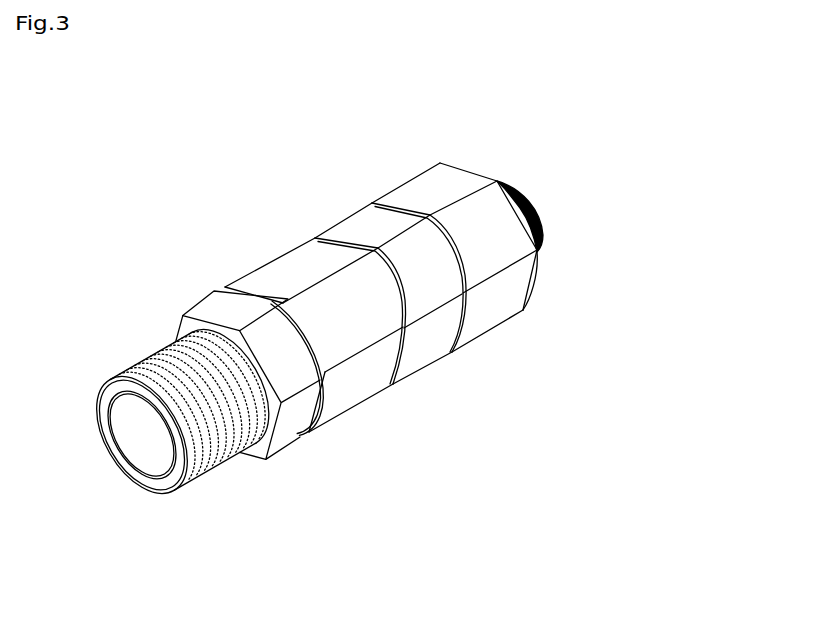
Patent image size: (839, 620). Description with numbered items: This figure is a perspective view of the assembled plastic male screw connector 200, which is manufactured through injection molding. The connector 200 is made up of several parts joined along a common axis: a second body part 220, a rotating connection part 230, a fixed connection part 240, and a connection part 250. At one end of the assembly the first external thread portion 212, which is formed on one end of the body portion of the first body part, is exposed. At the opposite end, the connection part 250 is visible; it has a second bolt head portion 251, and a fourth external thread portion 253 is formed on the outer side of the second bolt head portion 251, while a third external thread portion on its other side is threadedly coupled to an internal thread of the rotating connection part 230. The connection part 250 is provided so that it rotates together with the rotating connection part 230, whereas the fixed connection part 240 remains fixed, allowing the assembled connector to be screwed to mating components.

The plastic male screw connector 200 is at (582, 192).
The first external thread portion 212 is at (514, 188).
The second body part 220 is at (450, 383).
The rotating connection part 230 is at (383, 430).
The fixed connection part 240 is at (524, 334).
The connection part 250 is at (288, 477).
The second bolt head portion 251 is at (219, 304).
The fourth external thread portion 253 is at (148, 357).